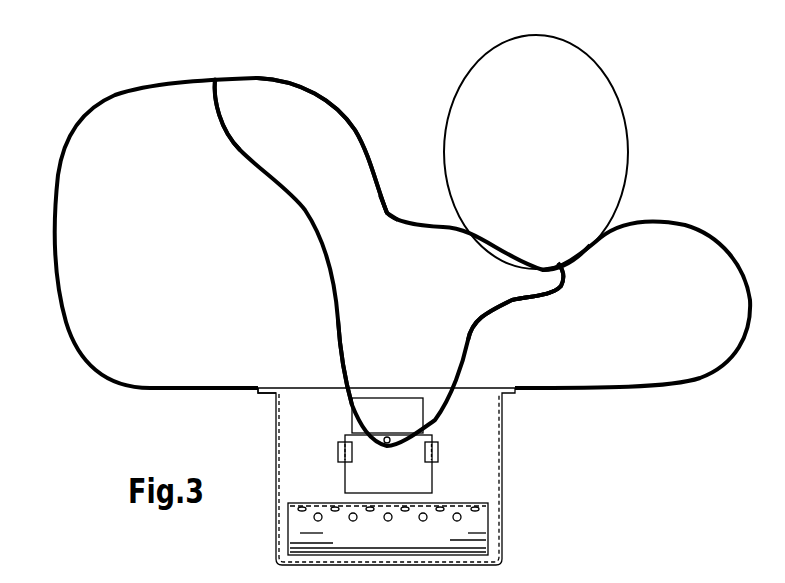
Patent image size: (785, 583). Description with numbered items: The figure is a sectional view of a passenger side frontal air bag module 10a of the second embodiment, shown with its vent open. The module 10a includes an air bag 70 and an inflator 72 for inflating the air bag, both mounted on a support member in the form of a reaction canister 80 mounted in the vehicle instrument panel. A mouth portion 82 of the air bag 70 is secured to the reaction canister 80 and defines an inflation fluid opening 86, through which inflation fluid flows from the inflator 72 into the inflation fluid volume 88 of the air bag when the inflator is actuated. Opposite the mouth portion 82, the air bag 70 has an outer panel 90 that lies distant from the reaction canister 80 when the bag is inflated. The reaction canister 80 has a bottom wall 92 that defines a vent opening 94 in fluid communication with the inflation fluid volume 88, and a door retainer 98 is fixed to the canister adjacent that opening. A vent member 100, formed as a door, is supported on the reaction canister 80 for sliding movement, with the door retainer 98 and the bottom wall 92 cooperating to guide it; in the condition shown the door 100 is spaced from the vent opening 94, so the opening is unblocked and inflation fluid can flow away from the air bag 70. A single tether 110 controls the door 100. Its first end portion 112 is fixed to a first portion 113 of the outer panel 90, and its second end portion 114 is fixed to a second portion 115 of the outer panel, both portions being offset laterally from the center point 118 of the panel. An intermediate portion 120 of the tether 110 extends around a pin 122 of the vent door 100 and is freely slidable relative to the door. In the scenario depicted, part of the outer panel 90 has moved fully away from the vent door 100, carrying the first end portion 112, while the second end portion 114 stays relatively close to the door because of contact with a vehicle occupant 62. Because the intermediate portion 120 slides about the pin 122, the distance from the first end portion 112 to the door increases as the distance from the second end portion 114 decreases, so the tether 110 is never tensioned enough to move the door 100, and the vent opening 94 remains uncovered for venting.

The air bag module 10a is at (190, 411).
The vehicle occupant 62 is at (630, 146).
The air bag 70 is at (70, 321).
The inflator 72 is at (286, 533).
The reaction canister 80 is at (274, 443).
The mouth portion 82 is at (278, 402).
The inflation fluid opening 86 is at (463, 407).
The inflation fluid volume 88 is at (200, 306).
The outer panel 90 is at (359, 140).
The bottom wall 92 is at (482, 483).
The vent opening 94 is at (358, 425).
The door retainer 98 is at (439, 453).
The vent member 100 is at (344, 480).
The tether 110 is at (294, 201).
The first end portion 112 is at (216, 116).
The first portion 113 is at (215, 80).
The second end portion 114 is at (562, 287).
The second portion 115 is at (562, 266).
The center point 118 is at (388, 213).
The intermediate portion 120 is at (350, 380).
The pin 122 is at (388, 436).